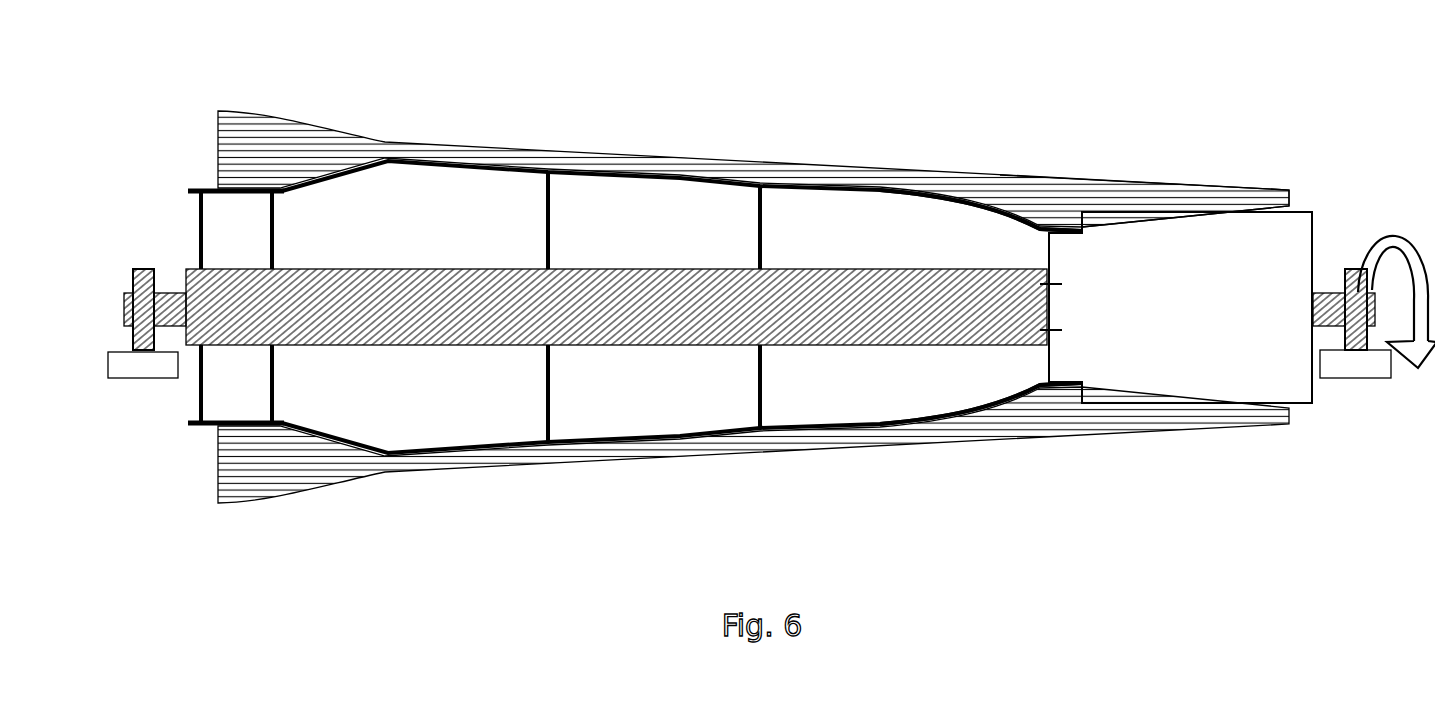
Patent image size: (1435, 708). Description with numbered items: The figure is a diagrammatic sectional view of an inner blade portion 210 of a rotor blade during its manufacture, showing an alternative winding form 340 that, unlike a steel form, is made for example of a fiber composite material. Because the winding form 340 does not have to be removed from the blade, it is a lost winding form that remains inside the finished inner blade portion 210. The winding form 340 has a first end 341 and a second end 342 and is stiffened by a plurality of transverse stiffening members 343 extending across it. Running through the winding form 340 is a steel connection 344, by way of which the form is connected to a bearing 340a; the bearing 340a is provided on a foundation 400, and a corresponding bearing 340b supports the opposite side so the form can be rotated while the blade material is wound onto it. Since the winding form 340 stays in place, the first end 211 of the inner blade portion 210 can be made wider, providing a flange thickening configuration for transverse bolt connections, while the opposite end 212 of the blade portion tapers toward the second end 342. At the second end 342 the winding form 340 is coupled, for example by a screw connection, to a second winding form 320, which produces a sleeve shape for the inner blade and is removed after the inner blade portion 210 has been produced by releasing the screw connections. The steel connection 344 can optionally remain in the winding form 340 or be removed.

The inner blade portion 210 is at (625, 452).
The first end of the inner blade portion 211 is at (255, 130).
The tapered end of dielectric body 212 is at (1255, 190).
The second winding form 320 is at (1183, 230).
The winding form 340 is at (477, 163).
The bearing 340a is at (143, 293).
The second shell end disc 340b is at (1357, 287).
The first end of the winding form 341 is at (199, 189).
The second end of the winding form 342 is at (1050, 222).
The transverse stiffening members 343 is at (551, 222).
The steel connection 344 is at (801, 298).
The foundation 400 is at (143, 365).